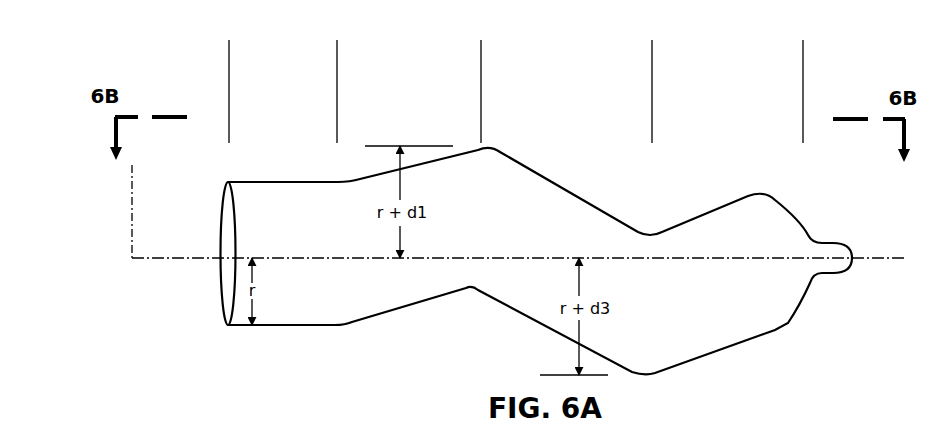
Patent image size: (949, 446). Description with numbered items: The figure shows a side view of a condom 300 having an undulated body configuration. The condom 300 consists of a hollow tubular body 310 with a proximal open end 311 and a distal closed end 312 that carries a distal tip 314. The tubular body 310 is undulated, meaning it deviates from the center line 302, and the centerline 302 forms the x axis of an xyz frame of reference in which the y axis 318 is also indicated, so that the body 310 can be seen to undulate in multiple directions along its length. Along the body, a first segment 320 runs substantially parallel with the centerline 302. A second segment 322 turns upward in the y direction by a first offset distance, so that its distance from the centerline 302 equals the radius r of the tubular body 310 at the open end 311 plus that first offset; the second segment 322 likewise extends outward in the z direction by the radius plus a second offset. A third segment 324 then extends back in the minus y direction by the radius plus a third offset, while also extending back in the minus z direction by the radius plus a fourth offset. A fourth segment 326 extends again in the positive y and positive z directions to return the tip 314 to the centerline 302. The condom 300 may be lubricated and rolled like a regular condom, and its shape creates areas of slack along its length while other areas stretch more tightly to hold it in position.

The condom 300 is at (520, 261).
The center line 302 is at (141, 254).
The hollow tubular body 310 is at (279, 182).
The proximal open end 311 is at (220, 308).
The distal closed end 312 is at (810, 300).
The distal tip 314 is at (847, 244).
The y axis 318 is at (132, 209).
The first segment 320 is at (229, 93).
The second segment 322 is at (481, 93).
The third segment 324 is at (652, 93).
The fourth segment length 326 is at (652, 93).